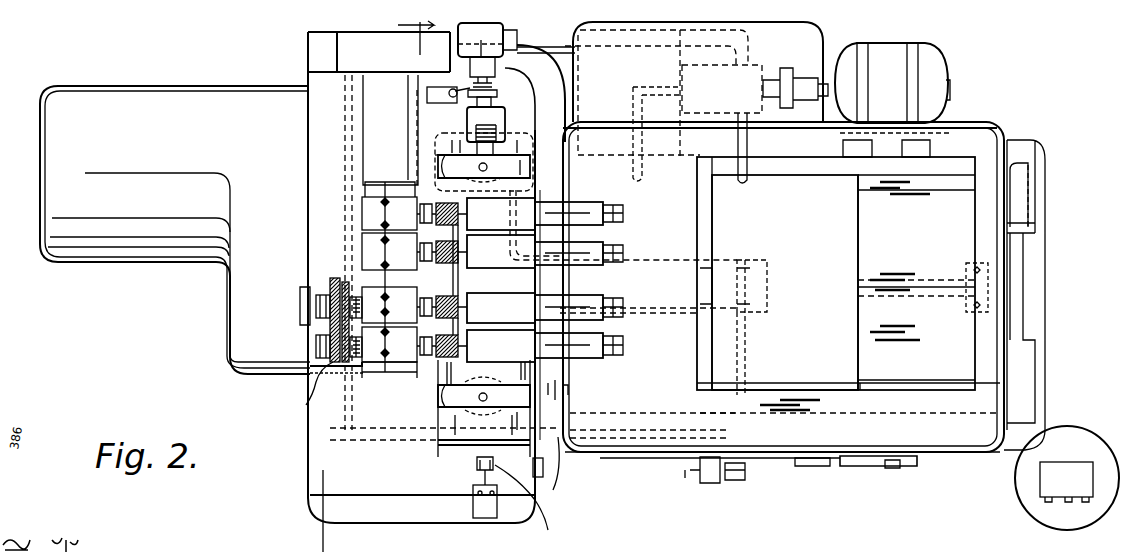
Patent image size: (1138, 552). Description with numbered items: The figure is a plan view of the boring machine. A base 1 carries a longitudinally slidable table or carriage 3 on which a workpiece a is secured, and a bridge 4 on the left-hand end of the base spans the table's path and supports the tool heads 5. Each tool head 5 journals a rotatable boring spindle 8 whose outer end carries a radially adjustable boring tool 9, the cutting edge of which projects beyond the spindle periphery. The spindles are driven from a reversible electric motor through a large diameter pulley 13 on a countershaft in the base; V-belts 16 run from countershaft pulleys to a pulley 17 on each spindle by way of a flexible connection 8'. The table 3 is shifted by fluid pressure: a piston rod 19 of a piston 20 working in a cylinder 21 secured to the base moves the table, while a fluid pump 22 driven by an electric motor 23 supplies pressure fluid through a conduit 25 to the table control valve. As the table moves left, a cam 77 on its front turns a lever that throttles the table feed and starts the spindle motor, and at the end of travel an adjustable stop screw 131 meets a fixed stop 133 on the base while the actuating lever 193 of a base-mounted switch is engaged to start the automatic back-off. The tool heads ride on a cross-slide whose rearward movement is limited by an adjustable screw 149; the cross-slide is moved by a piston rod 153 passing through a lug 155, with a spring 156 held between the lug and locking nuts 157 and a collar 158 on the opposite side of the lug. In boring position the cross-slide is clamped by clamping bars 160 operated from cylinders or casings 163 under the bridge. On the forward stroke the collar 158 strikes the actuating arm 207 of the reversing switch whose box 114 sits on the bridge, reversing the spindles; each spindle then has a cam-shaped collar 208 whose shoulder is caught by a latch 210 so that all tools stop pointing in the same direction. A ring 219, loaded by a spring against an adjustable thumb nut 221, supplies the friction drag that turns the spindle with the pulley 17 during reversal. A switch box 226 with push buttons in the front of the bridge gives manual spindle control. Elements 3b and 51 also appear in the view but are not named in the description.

The base 1 is at (1040, 333).
The table or carriage 3 is at (483, 287).
The bracket 3b is at (931, 353).
The bridge 4 is at (325, 540).
The tool head 5 is at (476, 291).
The boring spindle 8 is at (531, 285).
The flexible connection 8' is at (471, 408).
The boring tool 9 is at (615, 205).
The large diameter pulley 13 is at (1035, 288).
The V-belts 16 is at (338, 370).
The pulley 17 is at (316, 374).
The piston rod 19 is at (808, 279).
The piston 20 is at (705, 298).
The cylinder 21 is at (735, 262).
The fluid pump 22 is at (705, 105).
The electric motor 23 is at (930, 62).
The conduit 25 is at (705, 41).
The switch 51 is at (1062, 465).
The cam 77 is at (855, 460).
The switch box 114 is at (427, 94).
The adjustable stop screw 131 is at (697, 480).
The fixed stop 133 is at (553, 485).
The adjustable screw 149 is at (548, 530).
The piston rod 153 is at (520, 100).
The lug 155 is at (508, 113).
The spring 156 is at (565, 143).
The locking nuts 157 is at (455, 148).
The collar 158 is at (505, 52).
The clamping bar 160 is at (512, 167).
The cylinder or casing 163 is at (435, 163).
The actuating lever 193 is at (545, 470).
The actuating arm 207 is at (468, 122).
The collar 208 is at (420, 214).
The latch 210 is at (418, 336).
The ring 219 is at (318, 298).
The adjustable thumb nut 221 is at (316, 305).
The switch box 226 is at (483, 518).
The workpiece a is at (816, 221).